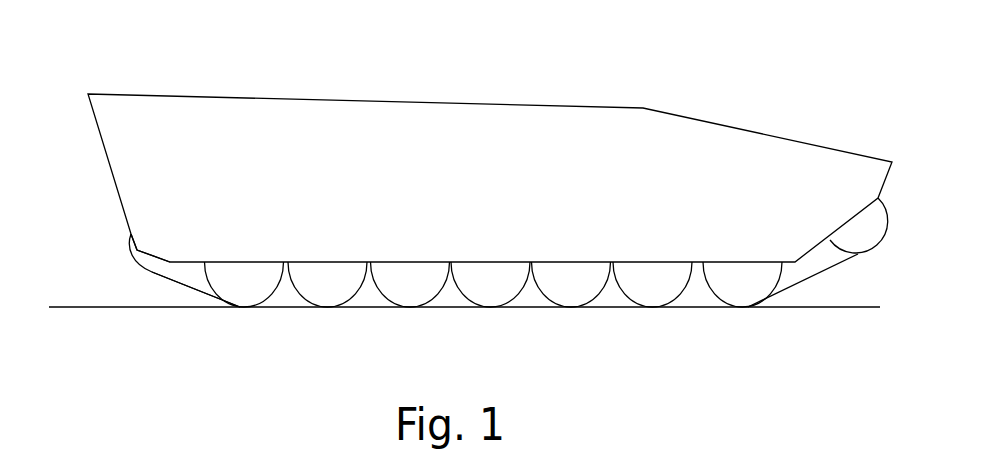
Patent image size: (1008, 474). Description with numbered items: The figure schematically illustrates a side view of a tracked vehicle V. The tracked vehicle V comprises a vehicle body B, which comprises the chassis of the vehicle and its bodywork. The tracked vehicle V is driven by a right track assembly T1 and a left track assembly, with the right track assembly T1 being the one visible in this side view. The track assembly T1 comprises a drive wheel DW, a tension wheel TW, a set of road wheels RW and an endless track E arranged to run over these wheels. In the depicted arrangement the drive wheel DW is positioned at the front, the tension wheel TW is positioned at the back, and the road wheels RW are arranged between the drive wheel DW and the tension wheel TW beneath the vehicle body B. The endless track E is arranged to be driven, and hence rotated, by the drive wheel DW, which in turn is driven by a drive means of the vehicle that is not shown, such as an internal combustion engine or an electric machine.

The tracked vehicle V is at (589, 66).
The vehicle body B is at (162, 92).
The right track assembly T1 is at (150, 275).
The tension wheel TW is at (180, 267).
The endless track E is at (197, 294).
The road wheels RW is at (277, 291).
The drive wheel DW is at (838, 254).